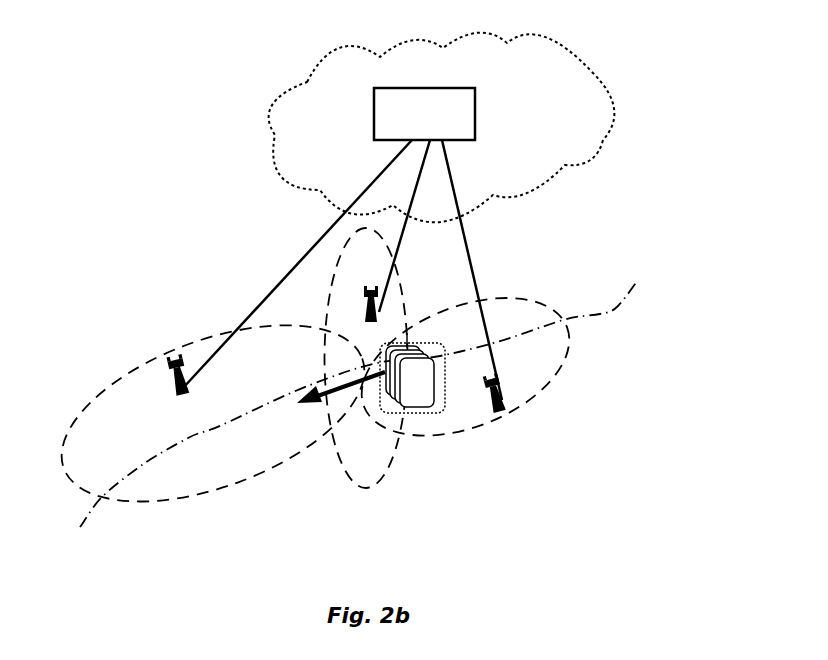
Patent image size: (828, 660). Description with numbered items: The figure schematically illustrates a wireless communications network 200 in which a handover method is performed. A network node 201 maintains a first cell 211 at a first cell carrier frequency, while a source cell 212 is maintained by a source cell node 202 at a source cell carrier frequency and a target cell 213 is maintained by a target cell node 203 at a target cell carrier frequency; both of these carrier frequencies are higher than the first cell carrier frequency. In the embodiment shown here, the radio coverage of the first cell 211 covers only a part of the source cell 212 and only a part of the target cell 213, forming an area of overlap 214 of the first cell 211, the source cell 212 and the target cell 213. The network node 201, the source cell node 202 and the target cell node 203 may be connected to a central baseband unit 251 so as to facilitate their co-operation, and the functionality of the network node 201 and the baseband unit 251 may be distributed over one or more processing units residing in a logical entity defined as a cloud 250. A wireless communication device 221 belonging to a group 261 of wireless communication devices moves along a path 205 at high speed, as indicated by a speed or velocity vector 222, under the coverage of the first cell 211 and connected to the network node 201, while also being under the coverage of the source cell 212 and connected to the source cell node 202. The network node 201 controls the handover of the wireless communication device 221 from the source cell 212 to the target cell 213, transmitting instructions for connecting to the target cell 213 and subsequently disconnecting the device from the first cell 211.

The wireless communications network 200 is at (185, 198).
The network node 201 is at (365, 300).
The source cell node 202 is at (498, 410).
The target cell node 203 is at (170, 354).
The path 205 is at (610, 317).
The first cell 211 is at (340, 250).
The source cell 212 is at (540, 400).
The target cell 213 is at (248, 478).
The area of overlap 214 is at (346, 355).
The wireless communication device 221 is at (418, 412).
The velocity vector 222 is at (310, 393).
The cloud 250 is at (607, 120).
The central baseband unit 251 is at (374, 126).
The group of wireless communication devices 261 is at (400, 412).